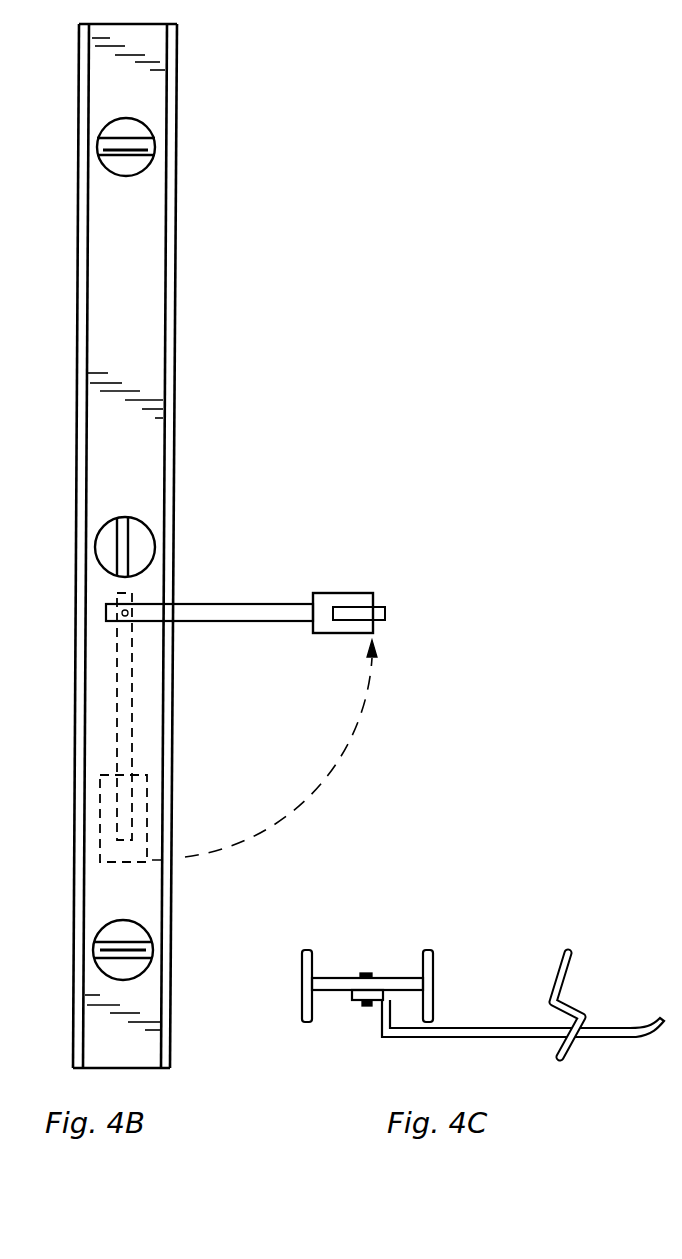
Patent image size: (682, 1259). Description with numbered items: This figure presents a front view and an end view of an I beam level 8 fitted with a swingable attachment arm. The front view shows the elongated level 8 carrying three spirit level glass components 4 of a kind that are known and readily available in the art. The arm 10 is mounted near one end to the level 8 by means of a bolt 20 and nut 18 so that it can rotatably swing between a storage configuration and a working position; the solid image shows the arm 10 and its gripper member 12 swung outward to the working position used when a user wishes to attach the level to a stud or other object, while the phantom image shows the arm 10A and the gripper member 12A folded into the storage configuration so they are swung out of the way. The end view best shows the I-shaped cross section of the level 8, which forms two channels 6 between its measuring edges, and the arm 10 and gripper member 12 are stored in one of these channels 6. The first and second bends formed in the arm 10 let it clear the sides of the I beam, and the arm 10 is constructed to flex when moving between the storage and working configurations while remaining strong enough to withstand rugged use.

In FIG. 4B, the spirit level glass component 4 is at (120, 138).
In FIG. 4C, the channel 6 is at (380, 954).
In FIG. 4B, the I beam level 8 is at (177, 207).
In FIG. 4C, the I beam level 8 is at (305, 950).
In FIG. 4B, the arm 10 is at (240, 604).
In FIG. 4C, the arm 10 is at (502, 1028).
In FIG. 4B, the arm in storage configuration 10A is at (117, 718).
In FIG. 4B, the gripper member 12 is at (345, 593).
In FIG. 4C, the gripper member 12 is at (558, 972).
In FIG. 4B, the gripper member in storage configuration 12A is at (105, 822).
In FIG. 4B, the nut 18 is at (125, 612).
In FIG. 4C, the nut 18 is at (365, 1006).
In FIG. 4C, the bolt 20 is at (365, 973).